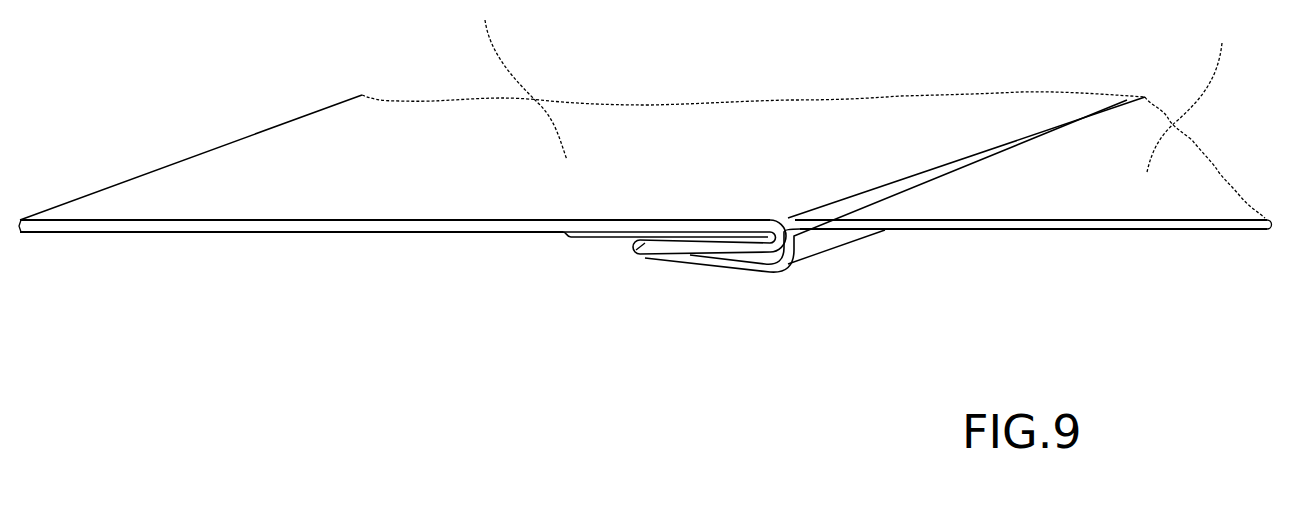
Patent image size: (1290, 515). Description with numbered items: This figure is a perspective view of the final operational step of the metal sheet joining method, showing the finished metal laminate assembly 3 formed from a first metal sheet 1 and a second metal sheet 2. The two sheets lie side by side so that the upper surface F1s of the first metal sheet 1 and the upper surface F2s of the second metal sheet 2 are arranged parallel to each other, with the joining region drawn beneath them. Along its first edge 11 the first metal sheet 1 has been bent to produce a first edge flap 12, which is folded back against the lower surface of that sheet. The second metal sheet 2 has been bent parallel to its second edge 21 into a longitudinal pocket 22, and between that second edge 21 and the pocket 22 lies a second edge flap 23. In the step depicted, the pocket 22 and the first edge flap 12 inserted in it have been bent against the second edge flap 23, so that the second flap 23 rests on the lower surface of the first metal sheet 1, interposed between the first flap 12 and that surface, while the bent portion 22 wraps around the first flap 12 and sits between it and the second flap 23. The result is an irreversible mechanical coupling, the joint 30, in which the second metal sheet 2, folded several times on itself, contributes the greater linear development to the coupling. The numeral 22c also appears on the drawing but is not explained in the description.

The first metal sheet 1 is at (190, 140).
The second metal sheet 2 is at (1142, 252).
The metal laminate assembly 3 is at (875, 89).
The first straight edge 11 is at (633, 254).
The first edge flap 12 is at (732, 276).
The second straight edge 21 is at (565, 233).
The longitudinal pocket 22 is at (675, 253).
The strip portion 22c is at (819, 5).
The second edge flap 23 is at (582, 238).
The joint 30 is at (810, 262).
The upper surface of the first metal sheet F1s is at (520, 80).
The upper surface of the second metal sheet F2s is at (1197, 92).